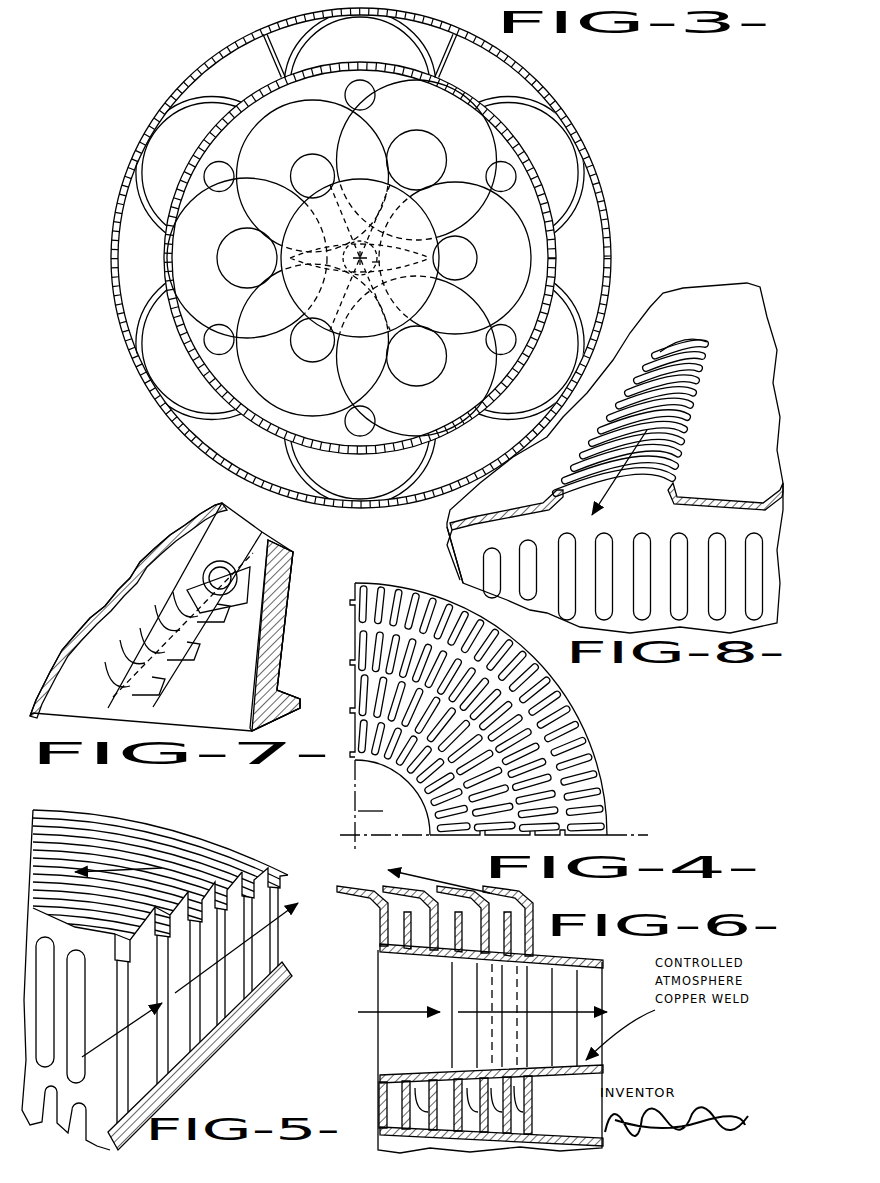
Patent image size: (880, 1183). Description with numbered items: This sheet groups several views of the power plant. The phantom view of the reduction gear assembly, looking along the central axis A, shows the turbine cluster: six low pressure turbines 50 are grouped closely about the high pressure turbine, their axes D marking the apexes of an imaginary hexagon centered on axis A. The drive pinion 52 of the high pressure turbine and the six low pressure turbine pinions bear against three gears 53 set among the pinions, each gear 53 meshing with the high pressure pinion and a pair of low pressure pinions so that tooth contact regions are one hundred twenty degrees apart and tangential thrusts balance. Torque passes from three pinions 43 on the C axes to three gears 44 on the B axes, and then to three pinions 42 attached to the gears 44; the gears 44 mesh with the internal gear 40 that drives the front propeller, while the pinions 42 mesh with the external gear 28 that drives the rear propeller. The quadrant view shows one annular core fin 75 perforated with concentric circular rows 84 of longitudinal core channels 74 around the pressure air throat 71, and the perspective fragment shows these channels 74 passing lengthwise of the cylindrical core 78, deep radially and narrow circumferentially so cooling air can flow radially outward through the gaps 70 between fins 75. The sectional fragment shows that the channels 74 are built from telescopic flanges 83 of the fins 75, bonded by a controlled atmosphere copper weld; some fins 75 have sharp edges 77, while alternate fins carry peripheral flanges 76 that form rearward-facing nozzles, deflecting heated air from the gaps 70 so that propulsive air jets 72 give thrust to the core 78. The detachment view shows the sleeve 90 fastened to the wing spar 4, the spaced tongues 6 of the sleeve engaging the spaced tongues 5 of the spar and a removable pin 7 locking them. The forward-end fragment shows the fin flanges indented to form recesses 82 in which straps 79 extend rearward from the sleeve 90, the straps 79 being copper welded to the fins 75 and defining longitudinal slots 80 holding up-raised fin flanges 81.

In FIG. 7, the wing spar 4 is at (272, 652).
In FIG. 7, the spaced tongues of the spar 5 is at (198, 657).
In FIG. 7, the spaced tongues of the sleeve 6 is at (145, 630).
In FIG. 7, the removable pin 7 is at (238, 574).
In FIG. 3, the external gear 28 is at (356, 340).
In FIG. 3, the internal gear 40 is at (355, 62).
In FIG. 3, the pinions 42 is at (440, 158).
In FIG. 3, the pinions 43 is at (290, 170).
In FIG. 3, the gears 44 is at (404, 120).
In FIG. 3, the low pressure turbines 50 is at (298, 52).
In FIG. 3, the drive pinion 52 is at (356, 150).
In FIG. 3, the gears 53 is at (305, 107).
In FIG. 5, the gaps 70 is at (118, 956).
In FIG. 6, the gaps 70 is at (524, 1100).
In FIG. 4, the pressure air throat 71 is at (494, 805).
In FIG. 8, the propulsive air jets 72 is at (601, 480).
In FIG. 5, the propulsive air jets 72 is at (150, 835).
In FIG. 6, the propulsive air jets 72 is at (416, 878).
In FIG. 8, the longitudinal core channels 74 is at (645, 535).
In FIG. 4, the longitudinal core channels 74 is at (515, 648).
In FIG. 5, the longitudinal core channels 74 is at (200, 1018).
In FIG. 6, the longitudinal core channels 74 is at (598, 979).
In FIG. 8, the core fins 75 is at (448, 537).
In FIG. 4, the core fins 75 is at (352, 683).
In FIG. 5, the core fins 75 is at (96, 1058).
In FIG. 6, the core fins 75 is at (378, 1103).
In FIG. 5, the flanges 76 is at (196, 850).
In FIG. 6, the flanges 76 is at (452, 956).
In FIG. 5, the sharp edges 77 is at (232, 862).
In FIG. 6, the sharp edges 77 is at (520, 900).
In FIG. 5, the cylindrical core 78 is at (258, 870).
In FIG. 6, the cylindrical core 78 is at (540, 906).
In FIG. 8, the straps 79 is at (723, 488).
In FIG. 8, the longitudinal slots 80 is at (708, 420).
In FIG. 8, the up-raised fin flanges 81 is at (661, 372).
In FIG. 8, the recesses 82 is at (506, 522).
In FIG. 6, the telescopic flanges 83 is at (380, 960).
In FIG. 4, the concentric circular rows 84 is at (590, 740).
In FIG. 8, the sleeve 90 is at (702, 300).
In FIG. 7, the sleeve 90 is at (135, 560).